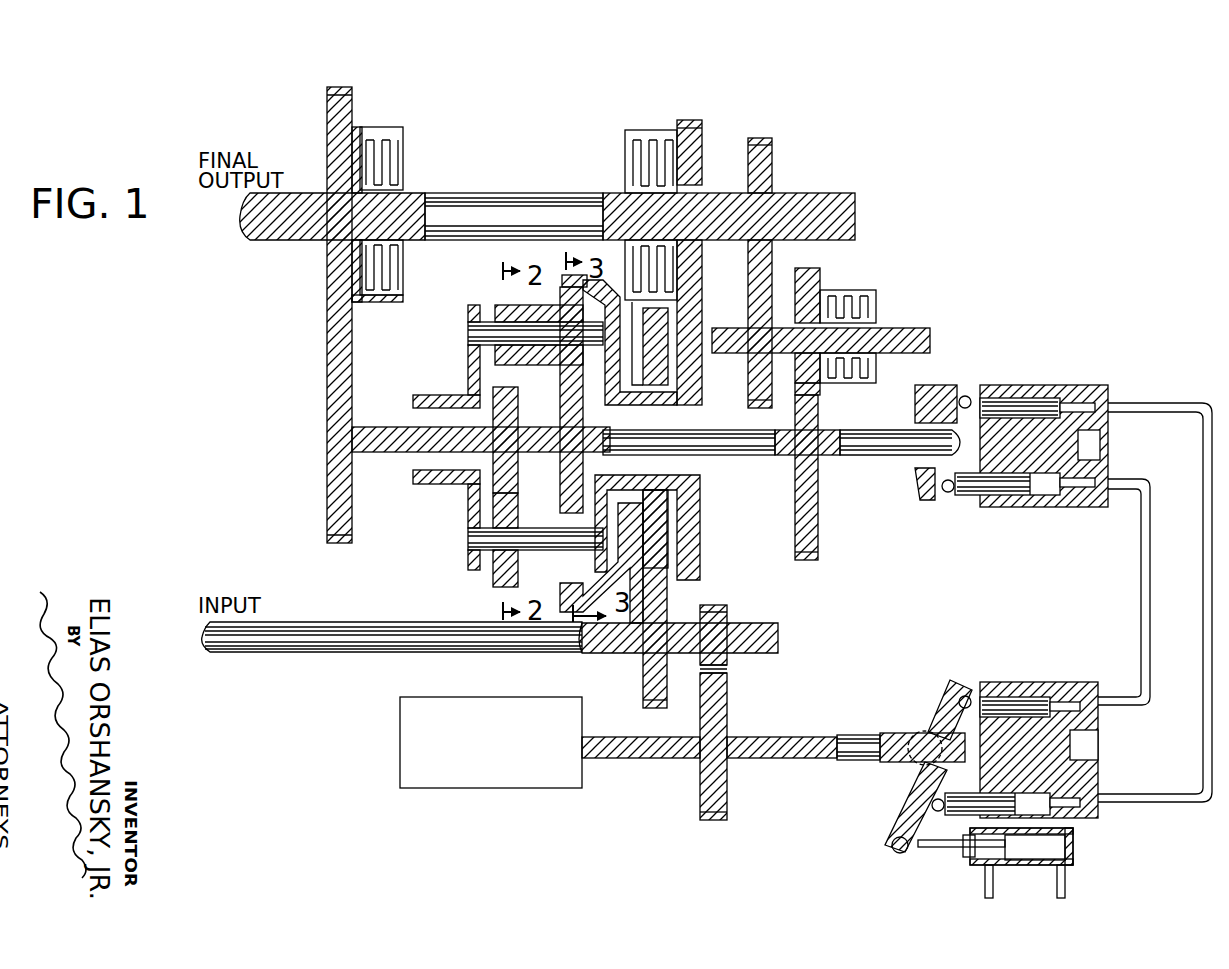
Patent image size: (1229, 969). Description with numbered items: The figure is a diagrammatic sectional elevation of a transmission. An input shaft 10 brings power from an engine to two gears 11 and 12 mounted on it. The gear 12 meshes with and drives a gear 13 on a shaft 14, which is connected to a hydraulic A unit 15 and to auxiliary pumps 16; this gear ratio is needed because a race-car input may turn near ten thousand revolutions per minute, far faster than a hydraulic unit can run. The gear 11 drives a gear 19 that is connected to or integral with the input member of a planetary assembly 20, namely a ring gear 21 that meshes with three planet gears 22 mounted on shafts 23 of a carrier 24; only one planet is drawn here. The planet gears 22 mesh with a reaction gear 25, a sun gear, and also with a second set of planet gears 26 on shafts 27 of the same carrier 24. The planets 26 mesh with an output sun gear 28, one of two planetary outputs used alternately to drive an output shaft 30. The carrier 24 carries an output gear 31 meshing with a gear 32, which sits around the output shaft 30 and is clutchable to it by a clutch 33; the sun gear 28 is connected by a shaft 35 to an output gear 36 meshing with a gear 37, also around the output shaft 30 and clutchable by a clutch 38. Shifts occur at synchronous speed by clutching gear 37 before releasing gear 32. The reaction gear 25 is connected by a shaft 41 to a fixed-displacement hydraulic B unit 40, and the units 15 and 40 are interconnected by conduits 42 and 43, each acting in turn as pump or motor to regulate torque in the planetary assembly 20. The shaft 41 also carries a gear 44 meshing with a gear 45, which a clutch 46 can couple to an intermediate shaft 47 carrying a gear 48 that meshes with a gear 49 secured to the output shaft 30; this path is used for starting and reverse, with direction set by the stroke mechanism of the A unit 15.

The input shaft 10 is at (300, 642).
The gear 11 is at (648, 664).
The gear 12 is at (727, 618).
The gear 13 is at (722, 702).
The shaft 14 is at (820, 738).
The hydraulic unit (A unit) 15 is at (1005, 678).
The auxiliary pumps 16 is at (530, 697).
The gear 19 is at (665, 560).
The planetary assembly 20 is at (458, 578).
The ring gear 21 is at (563, 295).
The planet gear 22 is at (543, 365).
The shaft 23 is at (472, 334).
The carrier 24 is at (472, 312).
The reaction gear 25 is at (585, 413).
The planet gear 26 is at (512, 508).
The shaft 27 is at (472, 542).
The output sun gear 28 is at (518, 472).
The output shaft 30 is at (548, 172).
The output gear 31 is at (702, 326).
The gear 32 is at (700, 268).
The clutch 33 is at (628, 158).
The shaft 35 is at (400, 437).
The output gear 36 is at (332, 362).
The gear 37 is at (338, 282).
The clutch 38 is at (405, 140).
The hydraulic unit (B unit) 40 is at (1003, 380).
The shaft 41 is at (730, 434).
The conduit 42 is at (1141, 550).
The conduit 43 is at (1203, 550).
The gear 44 is at (818, 498).
The gear 45 is at (818, 396).
The clutch 46 is at (877, 312).
The intermediate shaft 47 is at (941, 324).
The gear 48 is at (752, 374).
The gear 49 is at (772, 160).